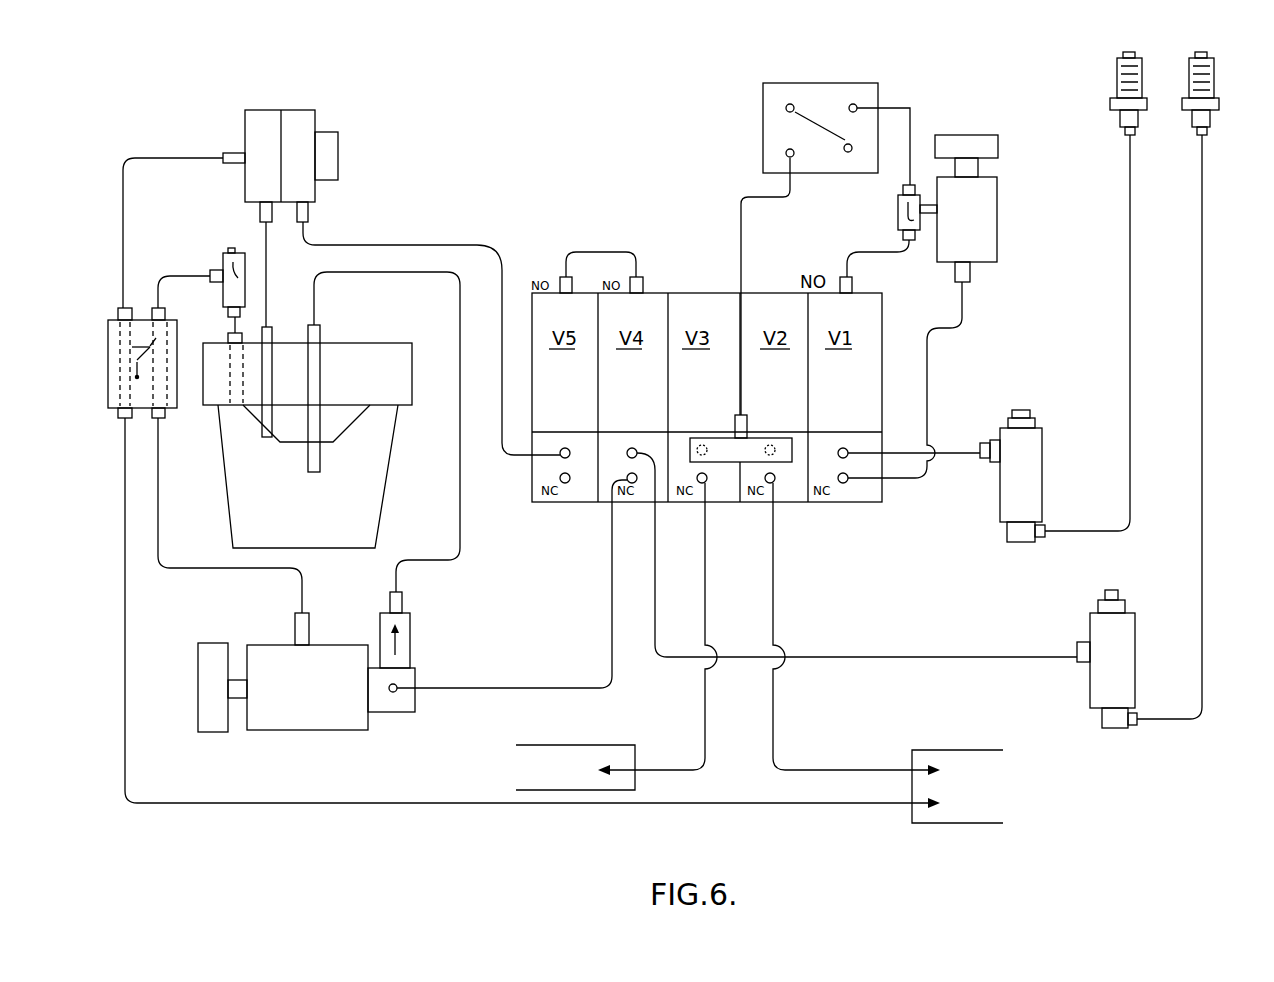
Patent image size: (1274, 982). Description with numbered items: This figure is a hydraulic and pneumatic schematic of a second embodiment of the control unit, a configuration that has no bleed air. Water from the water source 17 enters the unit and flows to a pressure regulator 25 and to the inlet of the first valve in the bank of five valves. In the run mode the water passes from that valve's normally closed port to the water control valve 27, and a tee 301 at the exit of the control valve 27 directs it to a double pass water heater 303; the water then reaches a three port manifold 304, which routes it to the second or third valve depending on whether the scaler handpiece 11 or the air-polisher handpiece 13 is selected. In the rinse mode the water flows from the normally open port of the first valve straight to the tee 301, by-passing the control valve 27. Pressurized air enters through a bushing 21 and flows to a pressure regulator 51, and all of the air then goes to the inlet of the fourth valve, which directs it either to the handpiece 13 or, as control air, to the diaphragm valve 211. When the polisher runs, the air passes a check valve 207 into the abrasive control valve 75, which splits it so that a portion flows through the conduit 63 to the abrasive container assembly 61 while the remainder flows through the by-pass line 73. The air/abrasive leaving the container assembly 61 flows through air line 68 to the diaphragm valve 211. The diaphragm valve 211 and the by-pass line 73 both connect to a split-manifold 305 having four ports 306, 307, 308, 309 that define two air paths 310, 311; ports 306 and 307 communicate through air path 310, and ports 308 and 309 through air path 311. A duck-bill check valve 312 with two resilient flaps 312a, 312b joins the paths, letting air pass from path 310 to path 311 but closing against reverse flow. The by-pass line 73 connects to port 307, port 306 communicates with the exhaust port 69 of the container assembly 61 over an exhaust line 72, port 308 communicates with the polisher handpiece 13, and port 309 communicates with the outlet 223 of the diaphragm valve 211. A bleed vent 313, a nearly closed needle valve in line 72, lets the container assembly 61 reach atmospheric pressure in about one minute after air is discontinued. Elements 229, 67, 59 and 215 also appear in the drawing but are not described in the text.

The diaphragm valve 211 is at (312, 105).
The outlet 223 is at (238, 152).
The port 229 is at (262, 213).
The air line 68 is at (267, 293).
The exhaust port 69 is at (245, 335).
The bleed vent 313 is at (242, 262).
The exhaust line 72 is at (199, 272).
The tube 67 is at (272, 340).
The tube 59 is at (321, 330).
The abrasive container assembly 61 is at (368, 340).
The split-manifold 305 is at (100, 405).
The manifold port 309 is at (120, 308).
The port 306 is at (160, 308).
The resilient flap 312a is at (151, 345).
The resilient flap 312b is at (140, 359).
The air path 310 is at (162, 371).
The air path 311 is at (118, 380).
The duck-bill check valve 312 is at (137, 380).
The port 308 is at (128, 424).
The port 307 is at (160, 420).
The by-pass line 73 is at (303, 588).
The abrasive control valve 75 is at (305, 714).
The check valve 207 is at (410, 616).
The conduit 63 is at (462, 468).
The line 215 is at (502, 262).
The three port manifold 304 is at (747, 422).
The double pass water heater 303 is at (870, 83).
The tee 301 is at (905, 220).
The water control valve 27 is at (988, 187).
The pressure regulator 25 is at (1042, 473).
The water source 17 is at (1130, 230).
The pressure regulator 51 is at (1135, 622).
The bushing 21 is at (1210, 85).
The scaler handpiece 11 is at (578, 745).
The air-polisher handpiece 13 is at (960, 823).